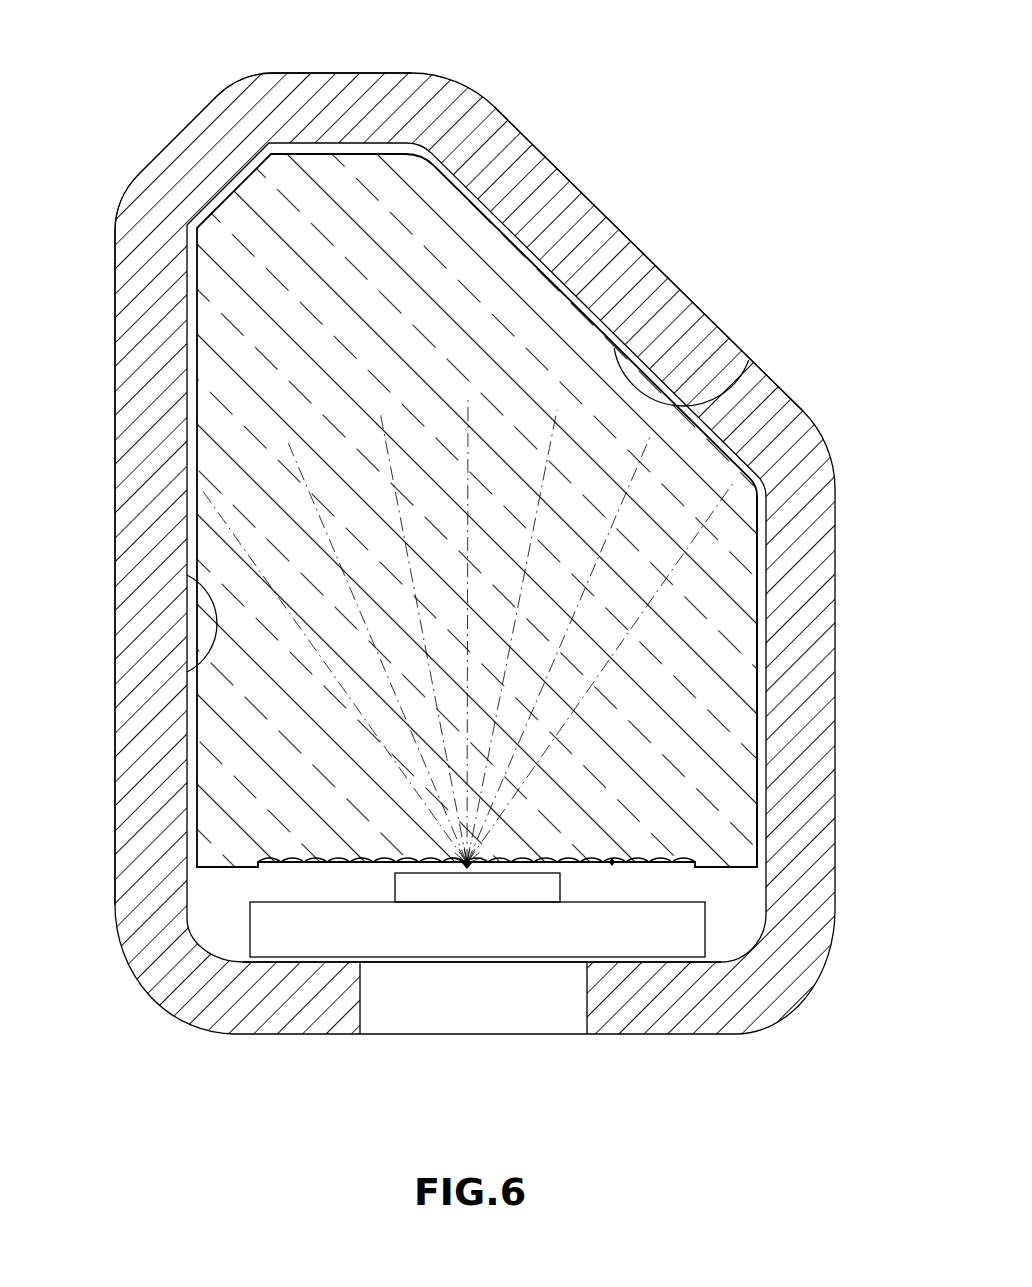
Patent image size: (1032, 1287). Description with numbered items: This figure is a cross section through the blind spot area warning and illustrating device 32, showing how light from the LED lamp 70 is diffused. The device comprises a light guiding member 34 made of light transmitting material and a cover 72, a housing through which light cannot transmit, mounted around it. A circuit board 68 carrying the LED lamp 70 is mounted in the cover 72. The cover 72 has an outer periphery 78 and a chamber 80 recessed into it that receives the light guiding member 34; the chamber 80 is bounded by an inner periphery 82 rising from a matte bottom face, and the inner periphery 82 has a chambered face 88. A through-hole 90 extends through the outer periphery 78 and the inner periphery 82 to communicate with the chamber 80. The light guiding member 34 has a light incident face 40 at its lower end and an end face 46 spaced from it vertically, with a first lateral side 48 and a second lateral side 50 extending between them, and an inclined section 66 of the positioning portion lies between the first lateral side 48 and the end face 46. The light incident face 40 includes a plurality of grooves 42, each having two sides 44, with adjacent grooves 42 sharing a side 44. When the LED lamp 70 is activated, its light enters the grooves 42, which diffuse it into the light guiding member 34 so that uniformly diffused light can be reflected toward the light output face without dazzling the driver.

The blind spot area warning and illustrating device 32 is at (728, 156).
The light guiding member 34 is at (512, 226).
The light incident face 40 is at (727, 868).
The grooves 42 is at (465, 868).
The sides 44 is at (612, 862).
The end face 46 is at (358, 157).
The first lateral side 48 is at (757, 628).
The second lateral side 50 is at (200, 512).
The inclined section 66 is at (580, 308).
The circuit board 68 is at (305, 930).
The LED lamp 70 is at (478, 888).
The cover 72 is at (803, 750).
The outer periphery 78 is at (116, 420).
The chamber 80 is at (212, 898).
The inner periphery 82 is at (187, 672).
The chambered face 88 is at (741, 360).
The through-hole 90 is at (498, 1000).